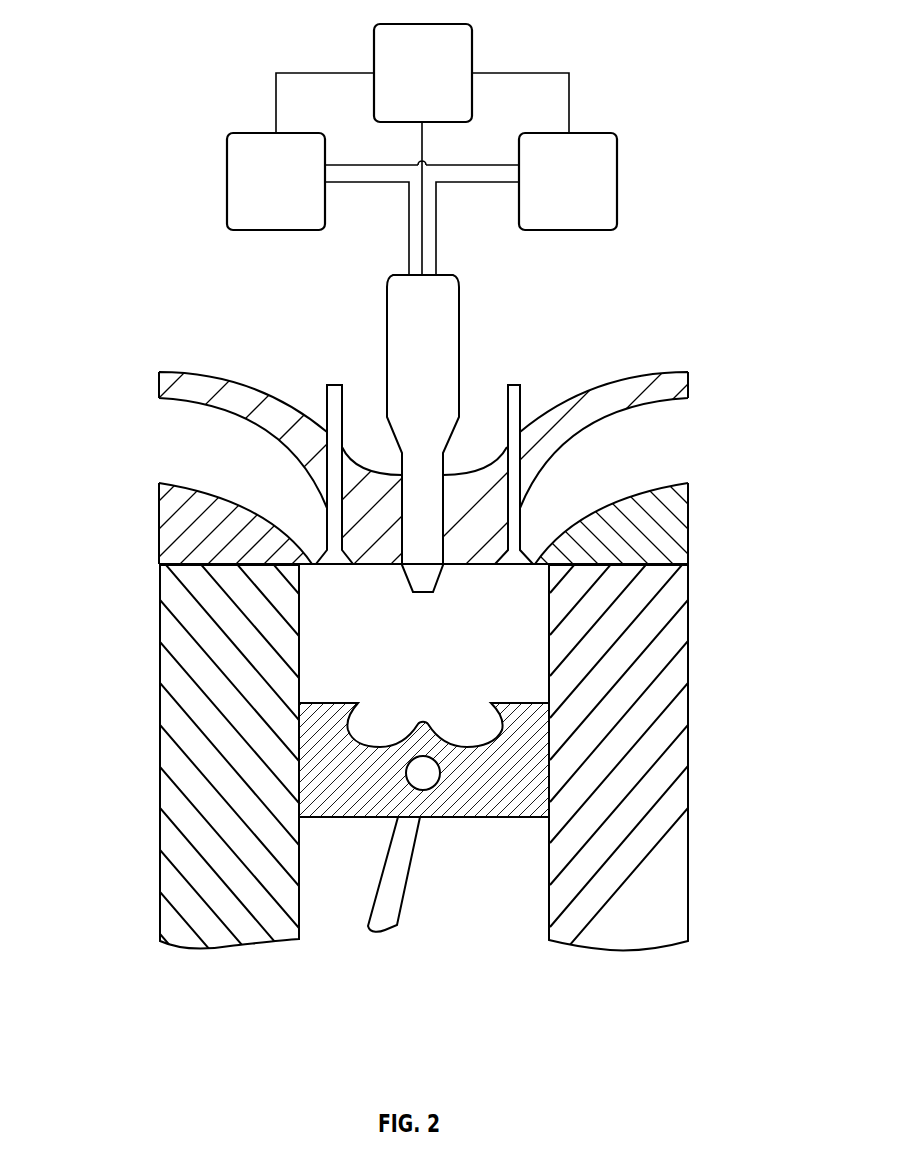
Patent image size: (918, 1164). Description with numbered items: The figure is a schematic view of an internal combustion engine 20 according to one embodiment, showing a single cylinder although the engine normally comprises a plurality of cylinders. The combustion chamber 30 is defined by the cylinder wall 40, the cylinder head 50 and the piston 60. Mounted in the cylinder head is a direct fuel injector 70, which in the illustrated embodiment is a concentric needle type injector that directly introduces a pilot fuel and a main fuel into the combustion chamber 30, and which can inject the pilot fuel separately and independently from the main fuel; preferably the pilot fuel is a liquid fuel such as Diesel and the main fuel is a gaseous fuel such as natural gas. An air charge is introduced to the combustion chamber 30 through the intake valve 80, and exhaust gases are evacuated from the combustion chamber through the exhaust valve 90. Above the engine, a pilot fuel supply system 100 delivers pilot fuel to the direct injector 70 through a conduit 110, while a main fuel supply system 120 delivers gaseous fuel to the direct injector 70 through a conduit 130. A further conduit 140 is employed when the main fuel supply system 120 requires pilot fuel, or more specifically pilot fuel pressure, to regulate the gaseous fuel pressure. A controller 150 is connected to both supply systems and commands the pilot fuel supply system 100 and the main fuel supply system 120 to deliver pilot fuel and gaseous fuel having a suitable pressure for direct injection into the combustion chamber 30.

The engine 20 is at (730, 392).
The combustion chamber 30 is at (437, 630).
The cylinder wall 40 is at (205, 663).
The cylinder head 50 is at (200, 533).
The piston 60 is at (492, 800).
The direct fuel injector 70 is at (462, 355).
The intake valve 80 is at (522, 403).
The exhaust valve 90 is at (325, 398).
The pilot fuel supply system 100 is at (227, 182).
The conduit 110 is at (407, 263).
The main fuel supply system 120 is at (617, 183).
The conduit 130 is at (438, 255).
The conduit 140 is at (397, 165).
The controller 150 is at (472, 43).